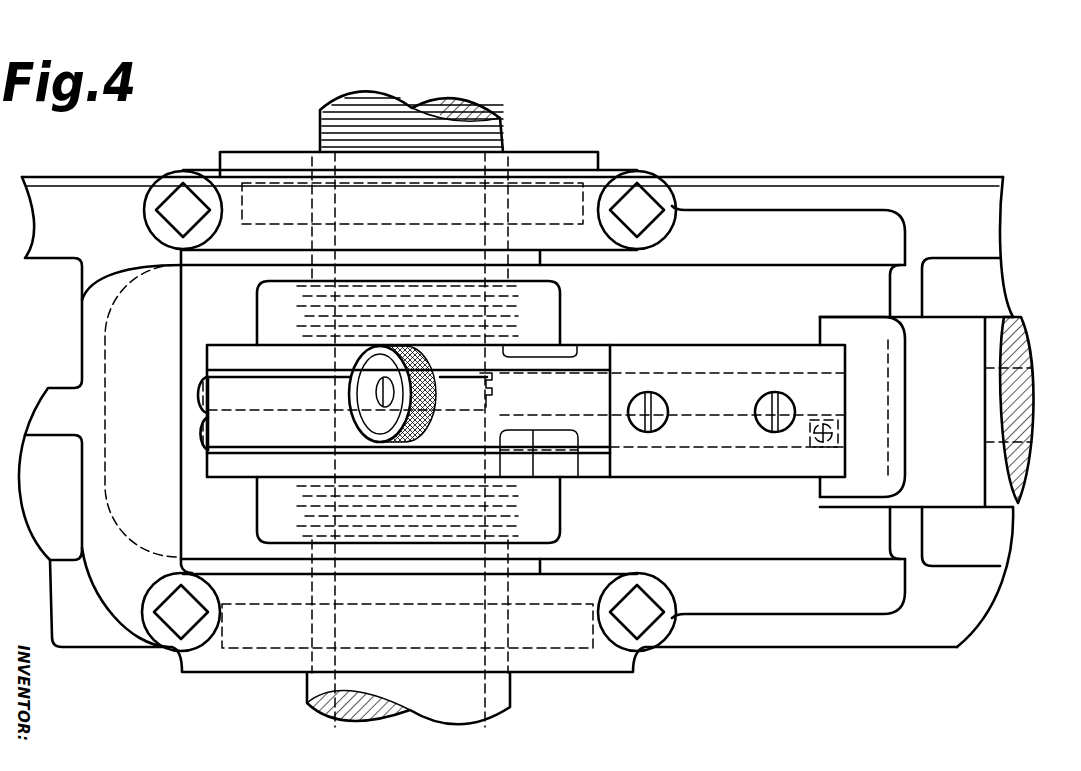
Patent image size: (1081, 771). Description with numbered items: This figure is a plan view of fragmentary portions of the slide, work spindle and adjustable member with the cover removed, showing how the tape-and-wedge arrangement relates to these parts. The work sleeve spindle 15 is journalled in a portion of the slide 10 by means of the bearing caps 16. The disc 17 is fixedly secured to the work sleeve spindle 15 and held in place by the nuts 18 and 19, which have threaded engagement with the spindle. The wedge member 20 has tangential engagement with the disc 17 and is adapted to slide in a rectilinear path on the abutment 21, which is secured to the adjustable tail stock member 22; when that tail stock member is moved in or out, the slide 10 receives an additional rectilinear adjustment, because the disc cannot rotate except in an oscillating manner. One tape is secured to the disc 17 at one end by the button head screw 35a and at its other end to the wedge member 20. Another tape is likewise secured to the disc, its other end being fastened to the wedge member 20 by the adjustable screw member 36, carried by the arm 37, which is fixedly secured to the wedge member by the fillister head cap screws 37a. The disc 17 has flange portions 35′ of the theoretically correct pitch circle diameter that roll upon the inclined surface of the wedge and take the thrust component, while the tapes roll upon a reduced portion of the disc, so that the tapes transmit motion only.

The slide 10 is at (93, 193).
The work sleeve spindle 15 is at (500, 133).
The bearing caps 16 is at (176, 180).
The disc 17 is at (247, 341).
The nut 18 is at (547, 310).
The nut 19 is at (547, 512).
The wedge member 20 is at (697, 341).
The abutment 21 is at (863, 327).
The adjustable tail stock member 22 is at (1010, 478).
The flange portions 35′ is at (203, 357).
The button head screw 35a is at (195, 427).
The adjustable screw member 36 is at (357, 368).
The arm 37 is at (707, 460).
The fillister head cap screws 37a is at (757, 403).